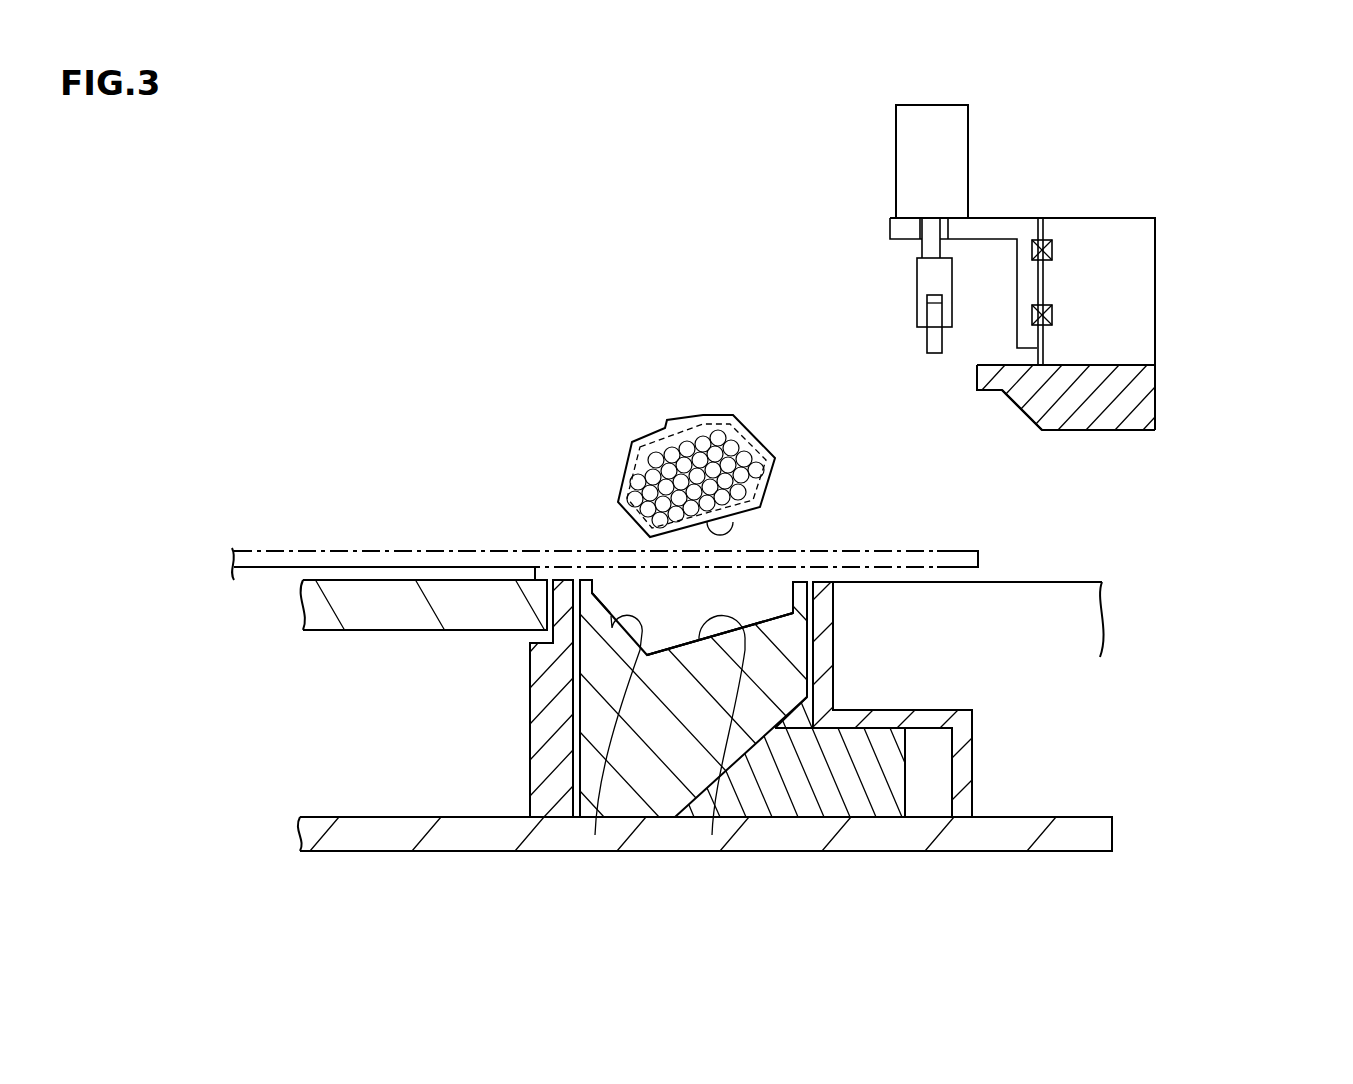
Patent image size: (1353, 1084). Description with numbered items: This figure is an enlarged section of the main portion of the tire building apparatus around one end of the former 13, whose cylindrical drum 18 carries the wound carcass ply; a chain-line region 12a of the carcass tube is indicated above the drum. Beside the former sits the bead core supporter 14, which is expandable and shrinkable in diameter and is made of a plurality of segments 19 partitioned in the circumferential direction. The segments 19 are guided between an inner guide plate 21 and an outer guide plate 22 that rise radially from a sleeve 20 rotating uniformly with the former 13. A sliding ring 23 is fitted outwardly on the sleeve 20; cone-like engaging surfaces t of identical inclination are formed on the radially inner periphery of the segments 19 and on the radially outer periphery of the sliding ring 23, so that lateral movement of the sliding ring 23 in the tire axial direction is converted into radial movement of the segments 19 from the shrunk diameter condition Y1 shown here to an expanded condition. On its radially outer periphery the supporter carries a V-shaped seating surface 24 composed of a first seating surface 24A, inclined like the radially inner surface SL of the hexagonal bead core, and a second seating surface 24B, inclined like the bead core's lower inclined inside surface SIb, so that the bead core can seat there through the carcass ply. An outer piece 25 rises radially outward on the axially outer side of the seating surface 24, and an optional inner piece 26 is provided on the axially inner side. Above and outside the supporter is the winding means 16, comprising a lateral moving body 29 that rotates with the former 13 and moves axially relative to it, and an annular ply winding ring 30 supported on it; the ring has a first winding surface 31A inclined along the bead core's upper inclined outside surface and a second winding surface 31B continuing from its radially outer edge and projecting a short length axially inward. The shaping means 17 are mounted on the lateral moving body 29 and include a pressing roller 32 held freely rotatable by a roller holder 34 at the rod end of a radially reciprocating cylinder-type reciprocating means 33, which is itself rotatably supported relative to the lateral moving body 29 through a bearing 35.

The sheet feed path 12a is at (572, 548).
The former 13 is at (320, 630).
The bead core supporter 14 is at (693, 698).
The winding means 16 is at (1040, 317).
The shaping means 17 is at (961, 229).
The cylindrical drum 18 is at (335, 614).
The segments 19 is at (599, 661).
The sleeve 20 is at (358, 817).
The guide plate 21 is at (530, 680).
The guide plate 22 is at (835, 647).
The sliding ring 23 is at (853, 794).
The seating surface 24 is at (680, 776).
The first seating surface 24A is at (739, 755).
The second seating surface 24B is at (646, 756).
The outer piece 25 is at (795, 585).
The inner piece 26 is at (603, 590).
The lateral moving body 29 is at (1156, 262).
The ply winding ring 30 is at (1156, 404).
The first winding surface 31A is at (1022, 415).
The second winding surface 31B is at (988, 393).
The pressing roller 32 is at (933, 338).
The reciprocating means 33 is at (910, 125).
The roller holder 34 is at (930, 275).
The bearing 35 is at (1052, 252).
The engaging surfaces t is at (755, 743).
The shrunk diameter condition Y1 is at (628, 580).
The radially inner surface SL is at (742, 533).
The lower inclined surface SIb is at (630, 524).